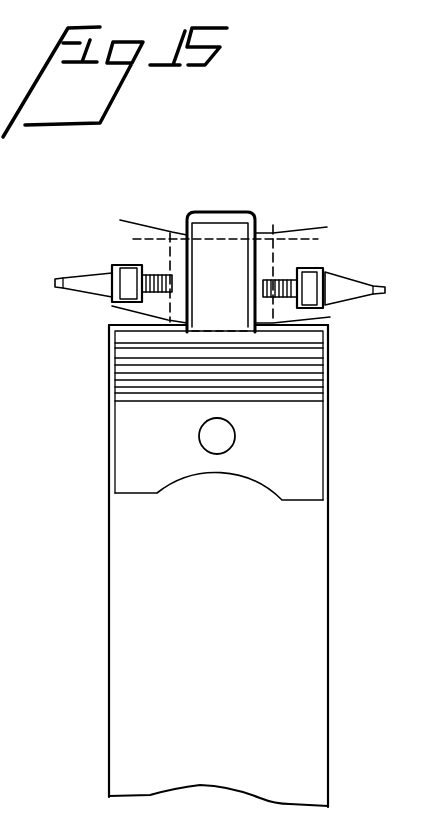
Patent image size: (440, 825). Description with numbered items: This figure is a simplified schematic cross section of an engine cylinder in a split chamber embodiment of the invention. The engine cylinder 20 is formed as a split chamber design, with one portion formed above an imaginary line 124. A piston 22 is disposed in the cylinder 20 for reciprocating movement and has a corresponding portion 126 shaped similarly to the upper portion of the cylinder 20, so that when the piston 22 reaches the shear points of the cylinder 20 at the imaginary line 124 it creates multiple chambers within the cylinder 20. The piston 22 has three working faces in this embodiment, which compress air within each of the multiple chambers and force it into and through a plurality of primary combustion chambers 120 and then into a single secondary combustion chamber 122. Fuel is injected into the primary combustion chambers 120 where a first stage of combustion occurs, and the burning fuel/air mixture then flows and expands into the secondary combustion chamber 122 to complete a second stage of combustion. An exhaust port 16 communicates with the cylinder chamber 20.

The exhaust port 16 is at (134, 258).
The cylinder chamber 20 is at (195, 595).
The piston 22 is at (265, 455).
The primary combustion chambers 120 is at (178, 228).
The secondary combustion chamber 122 is at (213, 212).
The imaginary line 124 is at (218, 330).
The piston portion 126 is at (202, 277).